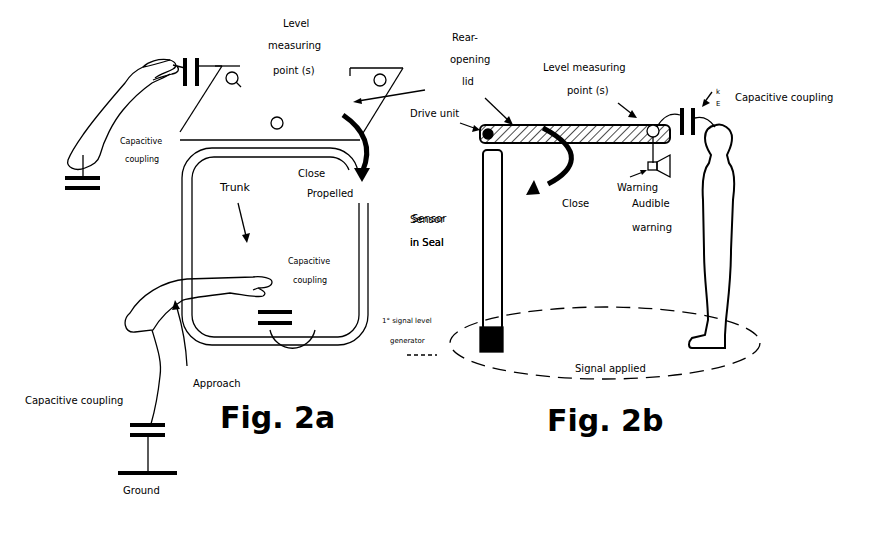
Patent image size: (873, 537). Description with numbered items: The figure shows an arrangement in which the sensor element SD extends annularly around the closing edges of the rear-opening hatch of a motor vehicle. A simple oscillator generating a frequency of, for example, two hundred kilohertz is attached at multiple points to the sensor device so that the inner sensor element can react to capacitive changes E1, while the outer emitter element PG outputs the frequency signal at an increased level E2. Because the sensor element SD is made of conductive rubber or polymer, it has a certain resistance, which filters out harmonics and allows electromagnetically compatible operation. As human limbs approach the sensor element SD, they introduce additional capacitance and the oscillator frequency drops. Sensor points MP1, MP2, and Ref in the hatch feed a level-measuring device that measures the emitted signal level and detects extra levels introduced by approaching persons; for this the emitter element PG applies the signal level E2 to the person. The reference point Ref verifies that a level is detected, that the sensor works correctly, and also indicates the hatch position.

In FIG. 2a, the capacitive change E1 is at (289, 328).
In FIG. 2a, the increased-level frequency signal E2 is at (82, 198).
In FIG. 2b, the increased-level frequency signal E2 is at (605, 343).
In FIG. 2a, the sensor element SD is at (400, 227).
In FIG. 2b, the sensor element SD is at (463, 233).
In FIG. 2b, the emitter element PG is at (476, 345).
In FIG. 2a, the sensor point MP1 is at (228, 85).
In FIG. 2a, the sensor point MP2 is at (372, 86).
In FIG. 2a, the reference point Ref is at (307, 100).